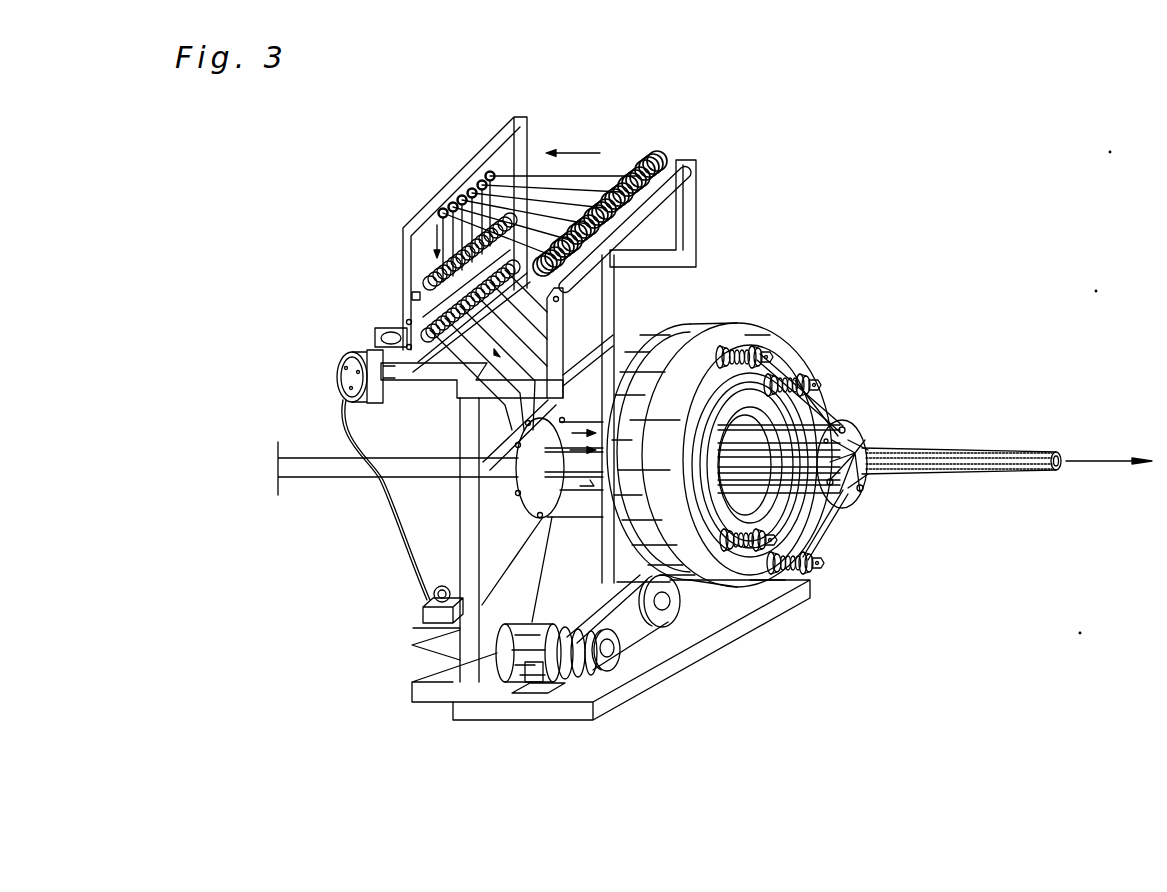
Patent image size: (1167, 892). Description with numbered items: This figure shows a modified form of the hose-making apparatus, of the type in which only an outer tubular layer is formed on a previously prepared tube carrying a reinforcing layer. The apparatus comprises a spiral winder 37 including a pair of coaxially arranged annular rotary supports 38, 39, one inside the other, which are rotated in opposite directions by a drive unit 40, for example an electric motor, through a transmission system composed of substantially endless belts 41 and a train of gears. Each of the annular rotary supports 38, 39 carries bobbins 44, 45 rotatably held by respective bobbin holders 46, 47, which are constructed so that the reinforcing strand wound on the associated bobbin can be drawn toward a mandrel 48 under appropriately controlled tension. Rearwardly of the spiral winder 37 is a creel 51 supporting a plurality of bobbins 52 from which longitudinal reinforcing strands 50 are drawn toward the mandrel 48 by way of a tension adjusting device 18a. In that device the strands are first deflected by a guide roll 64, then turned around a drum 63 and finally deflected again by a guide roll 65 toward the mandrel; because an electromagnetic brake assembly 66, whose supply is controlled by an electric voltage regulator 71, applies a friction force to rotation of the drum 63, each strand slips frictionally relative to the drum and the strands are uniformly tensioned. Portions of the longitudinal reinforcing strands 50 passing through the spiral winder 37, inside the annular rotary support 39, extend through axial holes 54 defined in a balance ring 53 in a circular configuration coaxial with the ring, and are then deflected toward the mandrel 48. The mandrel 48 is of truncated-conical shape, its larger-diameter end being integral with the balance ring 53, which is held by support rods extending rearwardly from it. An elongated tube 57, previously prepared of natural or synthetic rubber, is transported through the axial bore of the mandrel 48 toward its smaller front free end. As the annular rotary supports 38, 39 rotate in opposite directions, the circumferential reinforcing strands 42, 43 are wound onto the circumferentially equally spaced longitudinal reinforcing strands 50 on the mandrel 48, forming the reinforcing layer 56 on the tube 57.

The tension adjusting device 18a is at (490, 150).
The bobbins 52 is at (643, 158).
The creel 51 is at (690, 192).
The guide roll 64 is at (418, 293).
The drum 63 is at (396, 313).
The electromagnetic brake assembly 66 is at (340, 372).
The guide roll 65 is at (497, 266).
The longitudinal reinforcing strands 50 is at (448, 362).
The spiral winder 37 is at (699, 330).
The bobbin 44 is at (750, 336).
The bobbin holder 46 is at (768, 348).
The annular rotary support 38 is at (780, 357).
The annular rotary support 39 is at (812, 378).
The bobbin 45 is at (810, 388).
The bobbin holder 47 is at (815, 400).
The circumferential reinforcing strand 42 is at (820, 410).
The circumferential reinforcing strand 43 is at (826, 420).
The balance ring 53 is at (845, 428).
The reinforcing layer 56 is at (864, 452).
The axial holes 54 is at (850, 496).
The mandrel 48 is at (838, 505).
The elongated tube 57 is at (353, 468).
The electric voltage regulator 71 is at (427, 622).
The drive unit 40 is at (560, 682).
The endless belts 41 is at (643, 630).